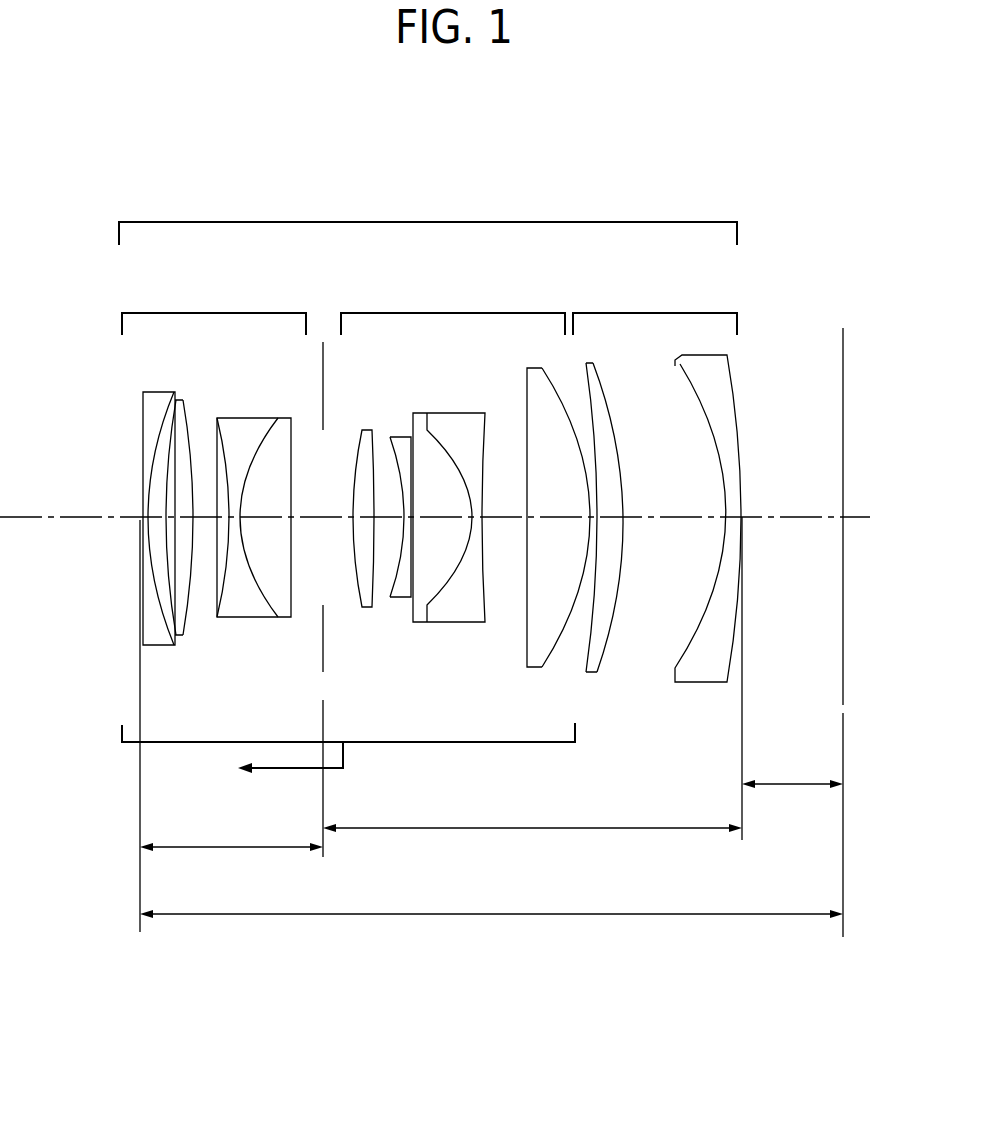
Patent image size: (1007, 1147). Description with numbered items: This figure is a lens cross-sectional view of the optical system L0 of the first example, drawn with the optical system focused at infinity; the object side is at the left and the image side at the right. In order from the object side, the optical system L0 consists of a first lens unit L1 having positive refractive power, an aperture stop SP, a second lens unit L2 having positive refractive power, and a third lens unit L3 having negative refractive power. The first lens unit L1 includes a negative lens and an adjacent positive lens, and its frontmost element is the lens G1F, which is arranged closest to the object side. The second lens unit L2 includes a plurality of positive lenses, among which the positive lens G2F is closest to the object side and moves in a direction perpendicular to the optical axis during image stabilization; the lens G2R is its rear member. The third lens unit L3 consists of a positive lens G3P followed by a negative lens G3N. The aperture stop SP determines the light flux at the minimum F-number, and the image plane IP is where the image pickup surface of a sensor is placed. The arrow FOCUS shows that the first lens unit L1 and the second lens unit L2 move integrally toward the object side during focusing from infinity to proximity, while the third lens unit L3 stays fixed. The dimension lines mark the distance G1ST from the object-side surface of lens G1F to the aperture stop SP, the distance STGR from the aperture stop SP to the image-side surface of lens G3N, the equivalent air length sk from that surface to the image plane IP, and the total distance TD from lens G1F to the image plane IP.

The optical system L0 is at (428, 213).
The first lens unit L1 is at (214, 444).
The second lens unit L2 is at (453, 447).
The third lens unit L3 is at (655, 304).
The lens arranged closest to the object side G1F is at (155, 400).
The positive lens G2F is at (367, 433).
The rear lens of second lens unit G2R is at (532, 385).
The positive lens G3P is at (598, 380).
The negative lens G3N is at (695, 382).
The aperture stop SP is at (323, 670).
The image plane IP is at (843, 483).
The focus arrow FOCUS is at (348, 768).
The distance from lens G1F to aperture stop G1ST is at (231, 862).
The distance from aperture stop to lens G3N STGR is at (532, 844).
The equivalent air length to image plane sk is at (792, 799).
The total distance to image plane TD is at (491, 932).